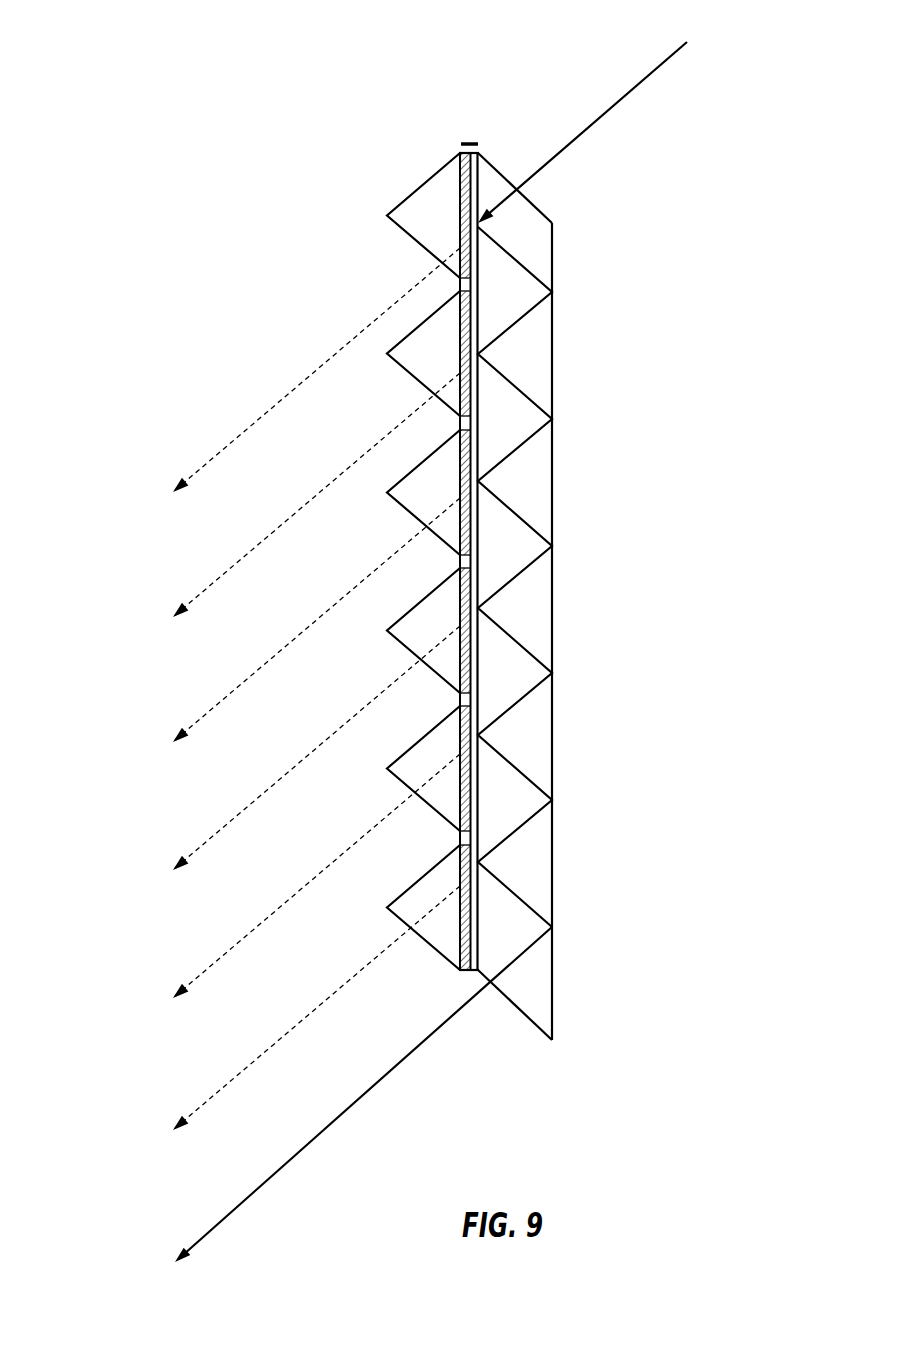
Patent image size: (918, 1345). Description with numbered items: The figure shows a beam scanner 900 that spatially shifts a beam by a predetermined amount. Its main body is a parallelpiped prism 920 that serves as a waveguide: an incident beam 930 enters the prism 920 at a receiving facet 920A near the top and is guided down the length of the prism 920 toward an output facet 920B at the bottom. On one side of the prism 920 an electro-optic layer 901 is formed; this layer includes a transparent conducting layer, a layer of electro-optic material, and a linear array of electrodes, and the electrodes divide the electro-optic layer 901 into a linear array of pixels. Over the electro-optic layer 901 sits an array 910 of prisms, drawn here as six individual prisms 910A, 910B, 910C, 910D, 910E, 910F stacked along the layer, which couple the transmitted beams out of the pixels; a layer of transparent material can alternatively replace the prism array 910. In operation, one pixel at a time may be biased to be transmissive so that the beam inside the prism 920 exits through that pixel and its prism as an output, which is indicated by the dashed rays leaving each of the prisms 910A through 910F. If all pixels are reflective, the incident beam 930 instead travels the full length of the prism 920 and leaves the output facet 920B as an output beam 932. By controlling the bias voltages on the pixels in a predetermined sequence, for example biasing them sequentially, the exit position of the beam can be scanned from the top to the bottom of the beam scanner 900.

The beam scanner 900 is at (108, 56).
The electro-optic layer 901 is at (471, 142).
The prism array 910 is at (441, 120).
The prism 910A is at (402, 202).
The prism 910B is at (402, 371).
The prism 910C is at (403, 508).
The prism 910D is at (405, 646).
The prism 910E is at (400, 781).
The prism 910F is at (397, 916).
The parallelpiped prism 920 is at (553, 263).
The receiving facet 920A is at (548, 196).
The output facet 920B is at (549, 1032).
The incident beam 930 is at (644, 78).
The output beam 932 is at (394, 1070).